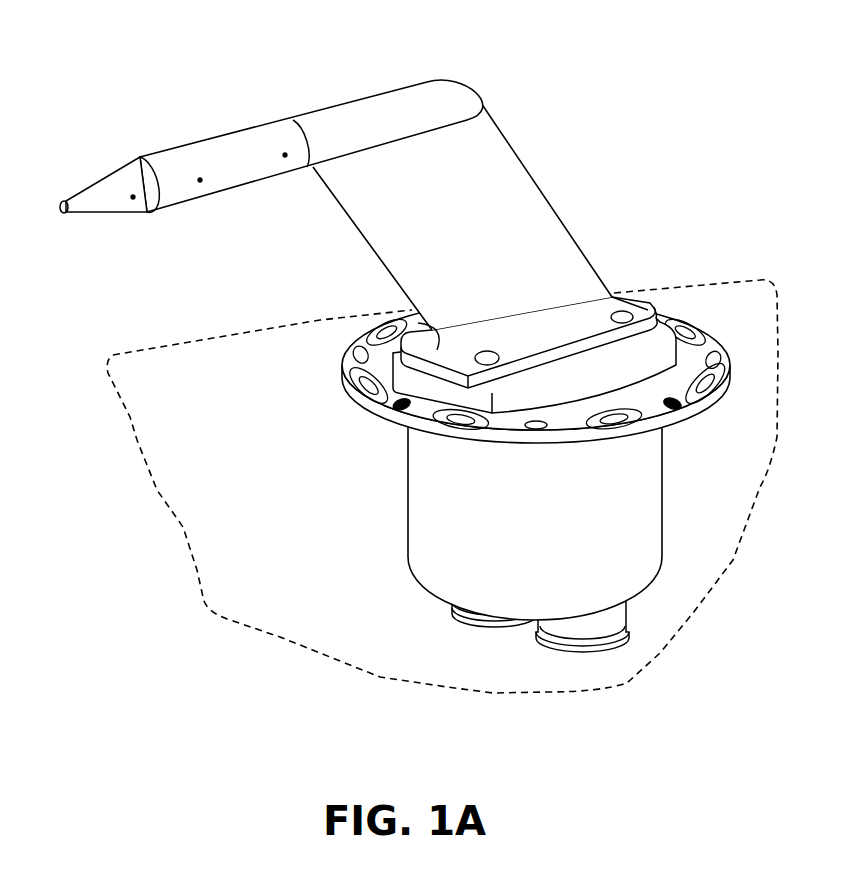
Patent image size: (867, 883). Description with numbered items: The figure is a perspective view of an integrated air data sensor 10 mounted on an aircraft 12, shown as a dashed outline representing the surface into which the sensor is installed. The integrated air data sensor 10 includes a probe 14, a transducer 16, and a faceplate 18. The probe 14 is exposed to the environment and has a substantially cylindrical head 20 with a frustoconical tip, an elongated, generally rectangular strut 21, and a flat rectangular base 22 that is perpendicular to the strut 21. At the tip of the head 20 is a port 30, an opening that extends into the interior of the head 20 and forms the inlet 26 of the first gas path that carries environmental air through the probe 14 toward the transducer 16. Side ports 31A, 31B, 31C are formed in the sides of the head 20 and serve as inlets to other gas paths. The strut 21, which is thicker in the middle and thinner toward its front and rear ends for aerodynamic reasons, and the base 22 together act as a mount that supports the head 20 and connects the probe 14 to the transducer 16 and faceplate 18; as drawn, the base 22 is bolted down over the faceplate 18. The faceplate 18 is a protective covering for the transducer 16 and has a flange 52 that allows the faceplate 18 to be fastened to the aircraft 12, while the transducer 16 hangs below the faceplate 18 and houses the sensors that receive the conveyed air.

The integrated air data sensor 10 is at (409, 356).
The aircraft 12 is at (143, 408).
The probe 14 is at (344, 186).
The transducer 16 is at (396, 514).
The faceplate 18 is at (512, 385).
The head 20 is at (261, 179).
The strut 21 is at (494, 153).
The base 22 is at (636, 310).
The inlet 26 is at (62, 210).
The port 30 is at (62, 200).
The side port 31A is at (133, 197).
The side port 31B is at (200, 180).
The side port 31C is at (285, 155).
The flange 52 is at (367, 407).